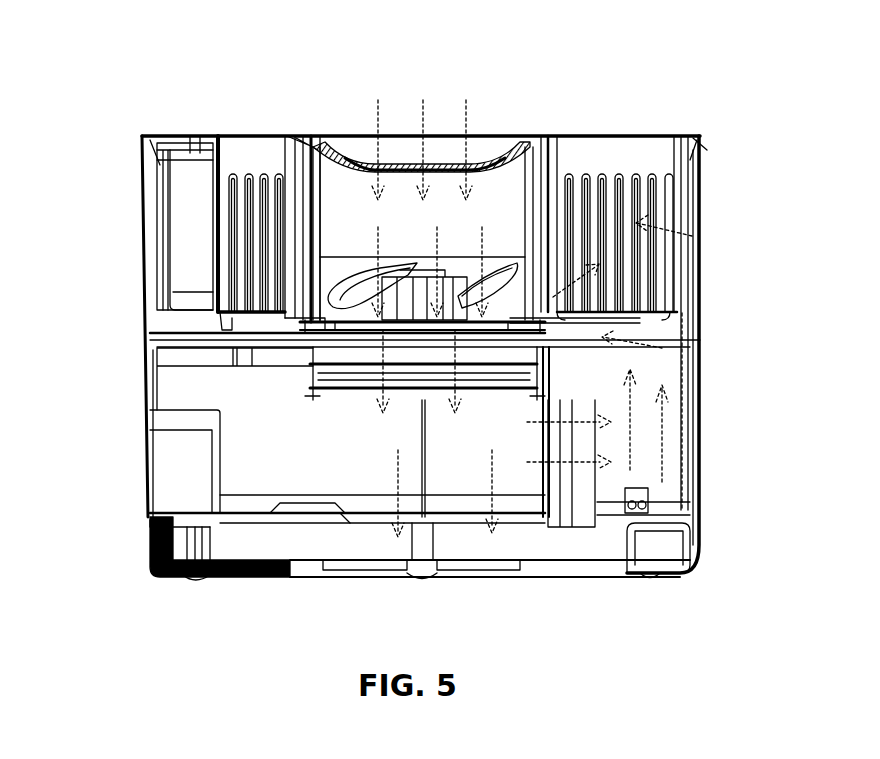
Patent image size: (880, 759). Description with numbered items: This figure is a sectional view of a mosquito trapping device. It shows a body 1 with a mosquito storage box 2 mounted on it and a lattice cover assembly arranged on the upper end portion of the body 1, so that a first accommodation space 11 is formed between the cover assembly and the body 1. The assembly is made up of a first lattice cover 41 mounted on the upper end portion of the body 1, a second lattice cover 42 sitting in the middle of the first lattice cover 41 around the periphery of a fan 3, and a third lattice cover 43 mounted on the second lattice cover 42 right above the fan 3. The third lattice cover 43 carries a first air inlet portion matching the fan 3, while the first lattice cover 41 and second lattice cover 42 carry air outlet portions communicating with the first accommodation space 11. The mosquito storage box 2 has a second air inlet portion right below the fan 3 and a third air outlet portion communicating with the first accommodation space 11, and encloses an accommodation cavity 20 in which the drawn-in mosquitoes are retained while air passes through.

The body 1 is at (698, 375).
The mosquito storage box 2 is at (150, 410).
The fan 3 is at (333, 293).
The first accommodation space 11 is at (490, 200).
The accommodation cavity 20 is at (300, 473).
The first lattice cover 41 is at (143, 228).
The second lattice cover 42 is at (292, 138).
The third lattice cover 43 is at (362, 148).